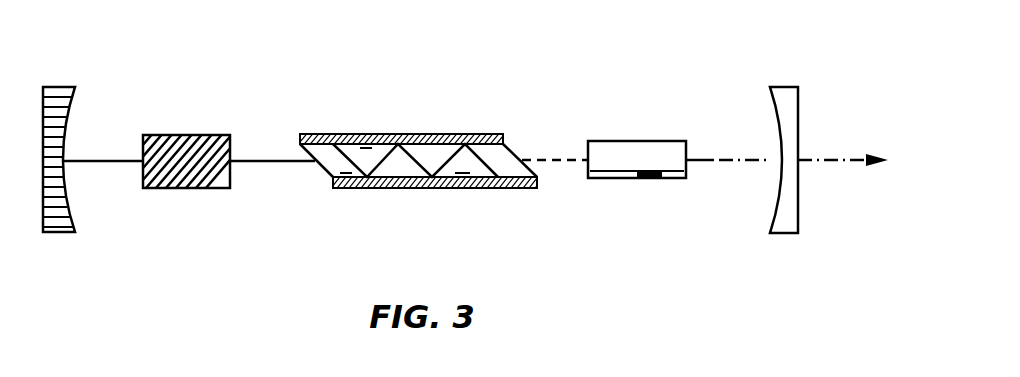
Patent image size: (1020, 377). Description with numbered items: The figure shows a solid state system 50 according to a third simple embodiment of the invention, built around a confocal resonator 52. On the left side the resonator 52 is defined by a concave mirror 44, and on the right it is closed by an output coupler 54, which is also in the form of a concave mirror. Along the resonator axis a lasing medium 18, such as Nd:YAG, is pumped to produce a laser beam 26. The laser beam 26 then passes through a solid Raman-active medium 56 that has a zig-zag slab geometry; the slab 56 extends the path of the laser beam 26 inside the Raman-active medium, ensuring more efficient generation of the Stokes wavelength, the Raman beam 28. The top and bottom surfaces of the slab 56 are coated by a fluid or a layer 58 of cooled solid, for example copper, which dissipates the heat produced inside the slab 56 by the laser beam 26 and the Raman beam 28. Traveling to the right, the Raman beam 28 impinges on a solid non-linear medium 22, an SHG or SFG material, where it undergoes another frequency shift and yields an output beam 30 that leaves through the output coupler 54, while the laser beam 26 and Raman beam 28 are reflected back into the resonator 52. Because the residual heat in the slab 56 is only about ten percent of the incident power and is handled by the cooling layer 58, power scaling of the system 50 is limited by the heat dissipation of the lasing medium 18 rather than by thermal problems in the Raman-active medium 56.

The concave mirror 44 is at (64, 87).
The lasing medium 18 is at (181, 188).
The laser beam 26 is at (247, 160).
The cooling layer 58 is at (402, 146).
The solid Raman-active medium 56 is at (323, 177).
The Raman beam 28 is at (557, 158).
The solid non-linear medium 22 is at (657, 178).
The output beam 30 is at (735, 157).
The output coupler 54 is at (788, 87).
The solid state system 50 is at (582, 28).
The confocal resonator 52 is at (553, 225).